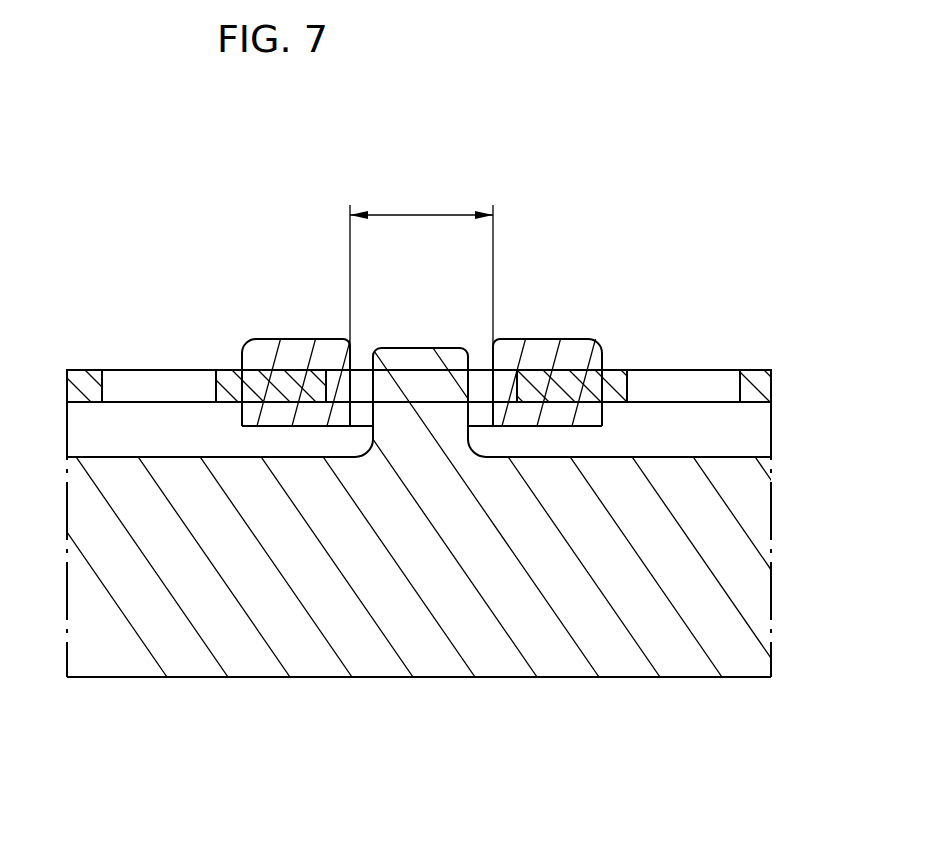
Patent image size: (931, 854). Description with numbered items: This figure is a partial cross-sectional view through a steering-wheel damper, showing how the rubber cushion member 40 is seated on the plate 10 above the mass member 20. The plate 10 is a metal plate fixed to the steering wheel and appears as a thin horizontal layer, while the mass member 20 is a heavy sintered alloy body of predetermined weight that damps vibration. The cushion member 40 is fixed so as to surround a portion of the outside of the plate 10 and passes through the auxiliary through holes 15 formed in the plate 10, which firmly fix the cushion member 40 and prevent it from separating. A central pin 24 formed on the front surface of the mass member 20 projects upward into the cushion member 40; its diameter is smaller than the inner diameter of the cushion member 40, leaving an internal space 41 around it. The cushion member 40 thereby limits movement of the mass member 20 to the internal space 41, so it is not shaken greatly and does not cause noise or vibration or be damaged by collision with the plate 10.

The plate 10 is at (436, 300).
The auxiliary through holes 15 is at (570, 380).
The mass member 20 is at (193, 677).
The central pin 24 is at (428, 368).
The cushion member 40 is at (258, 338).
The internal space 41 is at (418, 213).